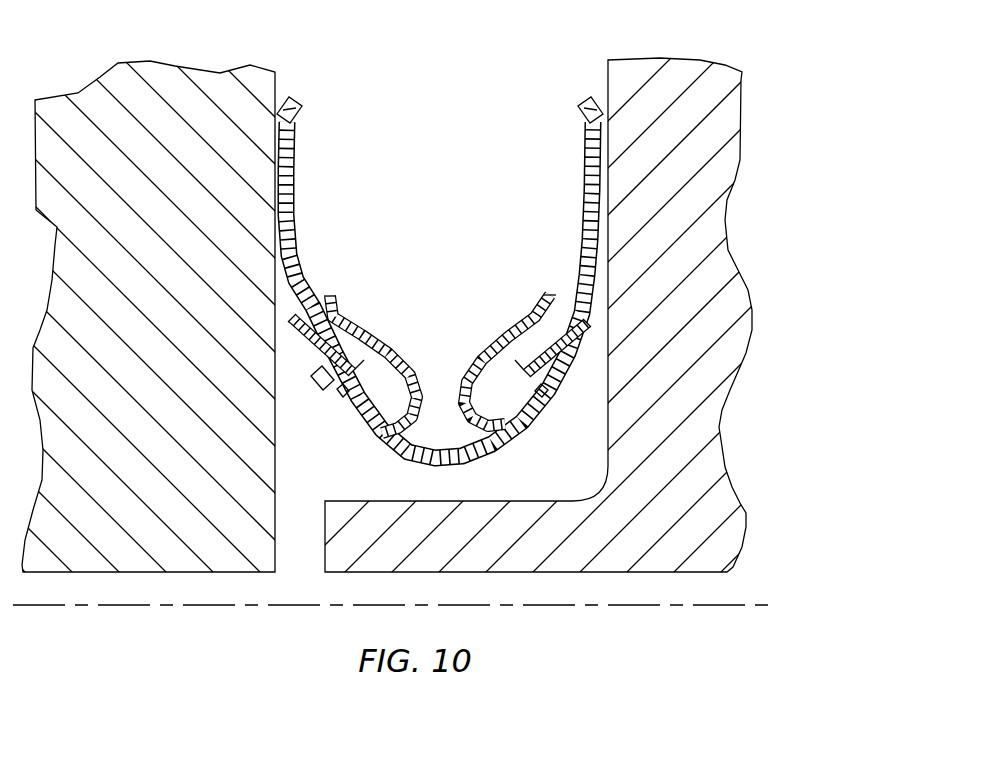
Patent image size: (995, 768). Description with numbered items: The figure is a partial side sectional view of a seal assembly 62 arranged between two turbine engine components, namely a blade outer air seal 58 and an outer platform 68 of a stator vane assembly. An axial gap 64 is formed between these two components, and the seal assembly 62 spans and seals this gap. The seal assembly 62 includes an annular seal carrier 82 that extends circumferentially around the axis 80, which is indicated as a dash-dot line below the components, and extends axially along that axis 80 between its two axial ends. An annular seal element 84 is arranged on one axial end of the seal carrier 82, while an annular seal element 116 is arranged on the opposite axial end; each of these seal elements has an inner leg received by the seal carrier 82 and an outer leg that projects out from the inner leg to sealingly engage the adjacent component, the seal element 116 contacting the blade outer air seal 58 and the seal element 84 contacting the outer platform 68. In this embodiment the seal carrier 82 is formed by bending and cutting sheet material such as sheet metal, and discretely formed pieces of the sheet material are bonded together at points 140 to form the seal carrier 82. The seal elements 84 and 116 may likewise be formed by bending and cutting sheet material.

The blade outer air seal 58 is at (200, 322).
The outer platform 68 is at (674, 312).
The seal assembly 62 is at (418, 192).
The axial gap 64 is at (518, 100).
The annular seal elements 116 is at (290, 207).
The seal carrier 82 is at (400, 322).
The seal element 84 is at (586, 246).
The points 140 is at (333, 398).
The axis 80 is at (757, 605).